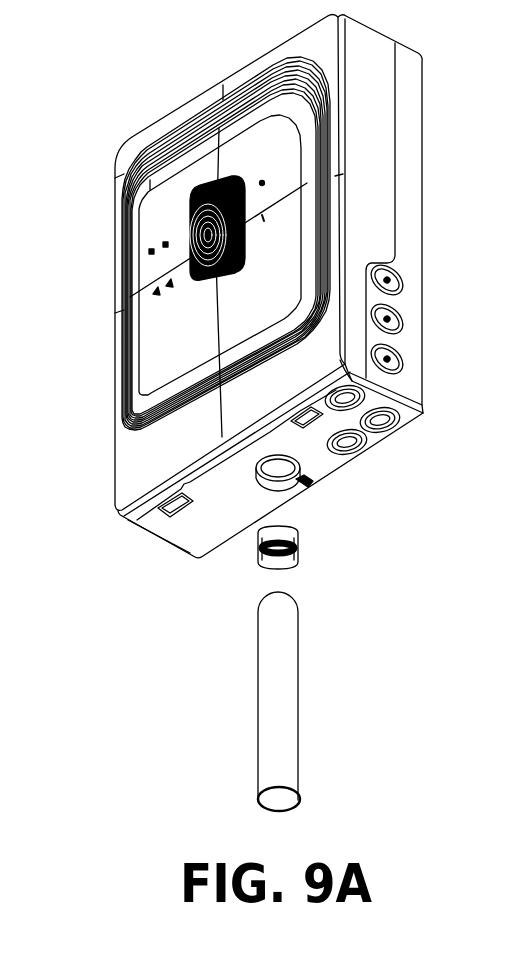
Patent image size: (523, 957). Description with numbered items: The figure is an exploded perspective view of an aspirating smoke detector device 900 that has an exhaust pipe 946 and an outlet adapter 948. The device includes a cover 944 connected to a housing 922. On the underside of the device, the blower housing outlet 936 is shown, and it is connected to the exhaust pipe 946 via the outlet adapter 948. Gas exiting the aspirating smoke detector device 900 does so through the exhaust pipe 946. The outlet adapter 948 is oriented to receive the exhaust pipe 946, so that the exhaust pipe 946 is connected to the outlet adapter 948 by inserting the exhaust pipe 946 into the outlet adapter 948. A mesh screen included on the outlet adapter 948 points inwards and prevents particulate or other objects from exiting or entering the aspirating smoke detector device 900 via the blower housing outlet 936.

The aspirating smoke detector device 900 is at (158, 47).
The housing 922 is at (423, 128).
The cover 944 is at (115, 176).
The blower housing outlet 936 is at (302, 480).
The outlet adapter 948 is at (300, 549).
The exhaust pipe 946 is at (298, 683).